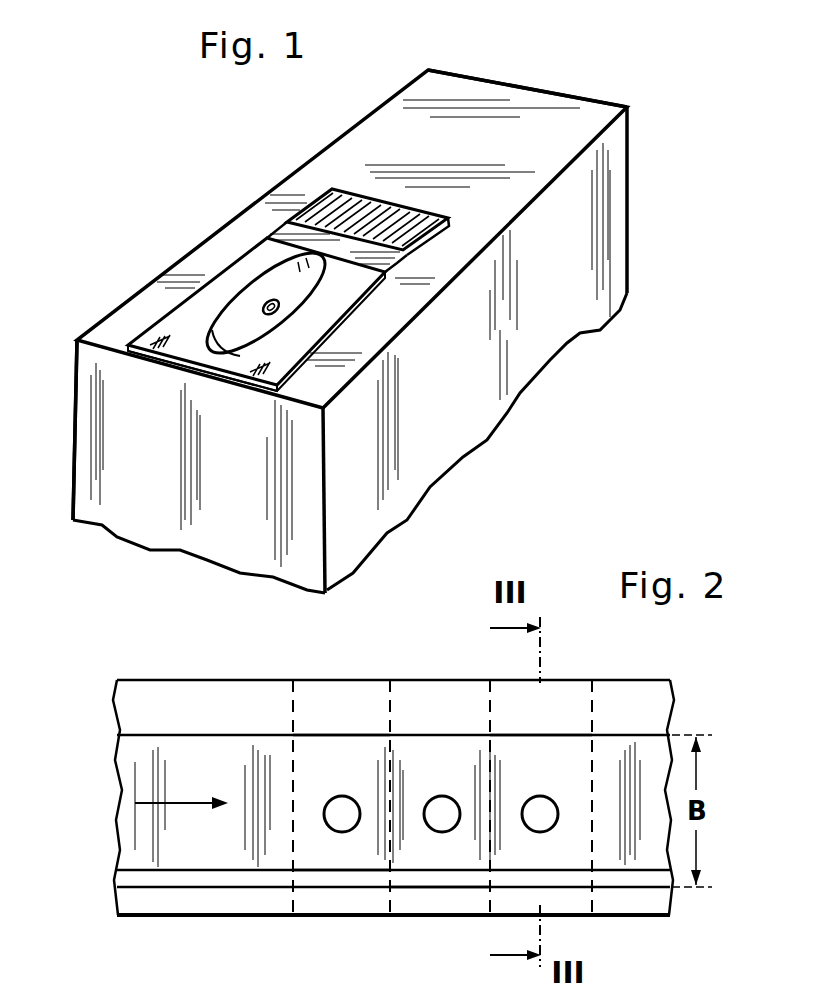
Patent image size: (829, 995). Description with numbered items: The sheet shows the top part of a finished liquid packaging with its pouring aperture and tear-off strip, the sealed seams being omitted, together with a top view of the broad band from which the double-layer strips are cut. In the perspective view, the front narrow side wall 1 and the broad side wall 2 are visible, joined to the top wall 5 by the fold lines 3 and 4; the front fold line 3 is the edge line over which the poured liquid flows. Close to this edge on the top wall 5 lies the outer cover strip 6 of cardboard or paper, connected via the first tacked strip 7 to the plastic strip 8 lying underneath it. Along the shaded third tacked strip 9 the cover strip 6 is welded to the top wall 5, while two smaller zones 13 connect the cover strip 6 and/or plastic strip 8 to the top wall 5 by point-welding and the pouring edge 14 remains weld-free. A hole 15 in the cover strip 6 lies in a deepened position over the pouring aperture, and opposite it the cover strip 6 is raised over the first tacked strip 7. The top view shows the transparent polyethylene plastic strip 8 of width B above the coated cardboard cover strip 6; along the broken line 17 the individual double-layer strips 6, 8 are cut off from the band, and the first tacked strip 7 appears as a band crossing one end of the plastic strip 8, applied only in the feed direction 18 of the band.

In FIG. 1, the front narrow side wall 1 is at (115, 480).
In FIG. 1, the broad side wall 2 is at (527, 362).
In FIG. 1, the fold line 3 is at (97, 350).
In FIG. 1, the fold line 4 is at (600, 135).
In FIG. 1, the top wall 5 is at (553, 107).
In FIG. 1, the outer cover strip 6 is at (190, 313).
In FIG. 2, the outer cover strip 6 is at (323, 755).
In FIG. 1, the first tacked strip 7 is at (400, 278).
In FIG. 2, the first tacked strip 7 is at (318, 880).
In FIG. 2, the plastic strip 8 is at (300, 812).
In FIG. 1, the third tacked strip 9 is at (397, 215).
In FIG. 1, the smaller zones 13 is at (158, 338).
In FIG. 1, the pouring edge 14 is at (262, 383).
In FIG. 1, the hole 15 is at (267, 305).
In FIG. 2, the hole 15 is at (445, 826).
In FIG. 2, the broken line 17 is at (293, 706).
In FIG. 2, the feed direction 18 is at (155, 805).